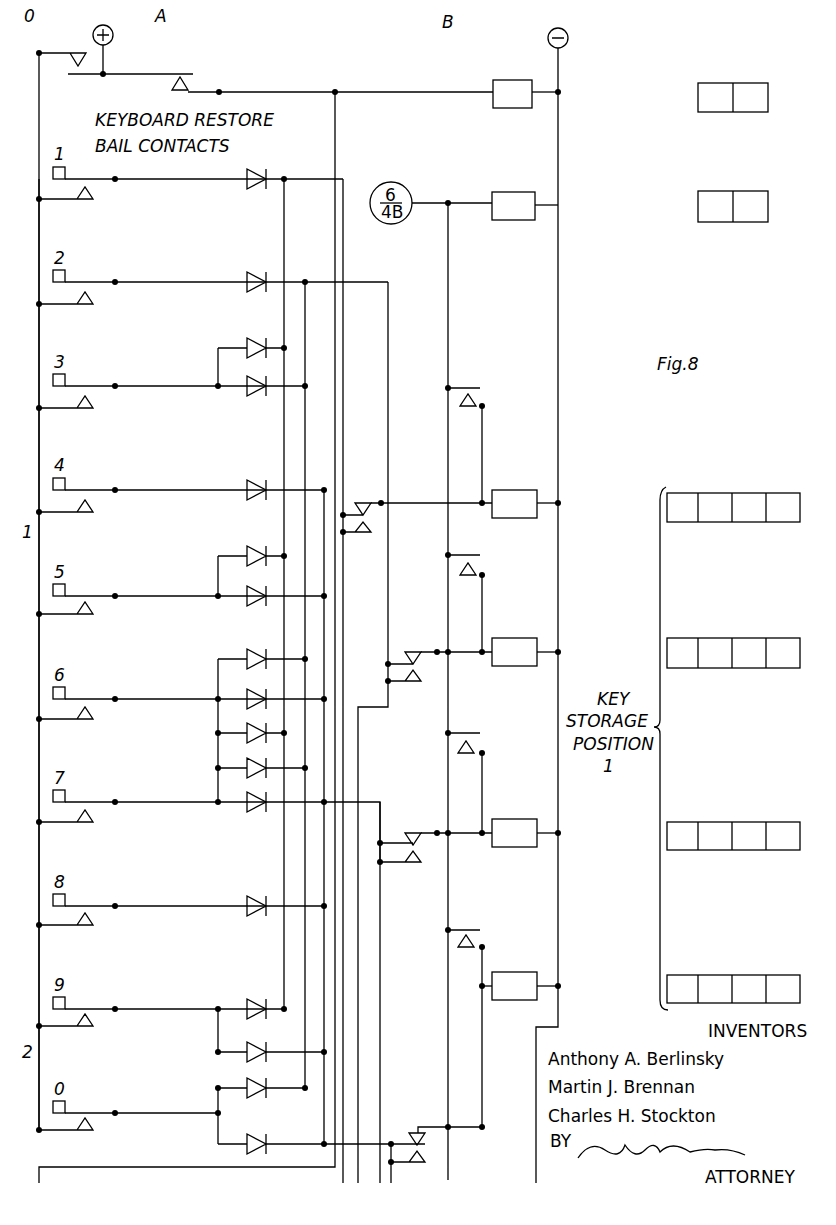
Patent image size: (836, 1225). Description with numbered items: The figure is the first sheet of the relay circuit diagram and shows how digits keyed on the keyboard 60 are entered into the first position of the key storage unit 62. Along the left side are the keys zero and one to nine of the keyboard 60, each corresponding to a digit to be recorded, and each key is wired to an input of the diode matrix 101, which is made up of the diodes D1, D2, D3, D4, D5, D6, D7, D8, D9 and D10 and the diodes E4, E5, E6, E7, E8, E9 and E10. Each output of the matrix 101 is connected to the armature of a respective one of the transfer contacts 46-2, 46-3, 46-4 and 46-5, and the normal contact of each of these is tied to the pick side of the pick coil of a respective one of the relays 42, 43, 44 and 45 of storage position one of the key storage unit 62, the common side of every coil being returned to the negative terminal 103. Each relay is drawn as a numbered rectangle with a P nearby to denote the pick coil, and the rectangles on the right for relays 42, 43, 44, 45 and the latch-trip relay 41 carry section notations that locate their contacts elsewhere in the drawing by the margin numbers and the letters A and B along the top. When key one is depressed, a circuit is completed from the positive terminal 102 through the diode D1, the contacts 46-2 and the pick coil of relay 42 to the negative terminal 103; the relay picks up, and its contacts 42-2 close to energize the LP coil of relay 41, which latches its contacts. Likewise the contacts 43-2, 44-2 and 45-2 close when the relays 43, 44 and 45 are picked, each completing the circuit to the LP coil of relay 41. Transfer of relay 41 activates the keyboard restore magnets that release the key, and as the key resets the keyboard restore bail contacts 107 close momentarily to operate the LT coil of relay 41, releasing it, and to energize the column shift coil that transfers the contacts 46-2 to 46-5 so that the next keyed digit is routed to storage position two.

The positive terminal 102 is at (93, 36).
The negative terminal 103 is at (568, 38).
The keyboard restore bail contacts 107 is at (174, 80).
The keyboard 60 is at (210, 44).
The key storage unit 62 is at (418, 138).
The diode matrix 101 is at (172, 445).
The latch-trip relay 41 is at (630, 153).
The relay 42 is at (586, 503).
The relay 43 is at (611, 649).
The relay 44 is at (611, 832).
The relay 45 is at (640, 985).
The contacts 42-2 is at (478, 400).
The contacts 43-2 is at (480, 567).
The contacts 44-2 is at (520, 720).
The contacts 45-2 is at (480, 935).
The contacts 46-2 is at (356, 503).
The contacts 46-3 is at (404, 652).
The contacts 46-4 is at (400, 833).
The contacts 46-5 is at (410, 1135).
The diode D1 is at (246, 184).
The diode D2 is at (246, 276).
The diode D3 is at (246, 342).
The diode D4 is at (246, 392).
The diode D5 is at (246, 484).
The diode D6 is at (246, 550).
The diode D7 is at (246, 600).
The diode D8 is at (246, 654).
The diode D9 is at (246, 704).
The diode D10 is at (246, 728).
The diode E4 is at (256, 1134).
The diode E5 is at (246, 1083).
The diode E6 is at (248, 1048).
The diode E7 is at (246, 1004).
The diode E8 is at (248, 900).
The diode E9 is at (254, 812).
The diode E10 is at (246, 766).